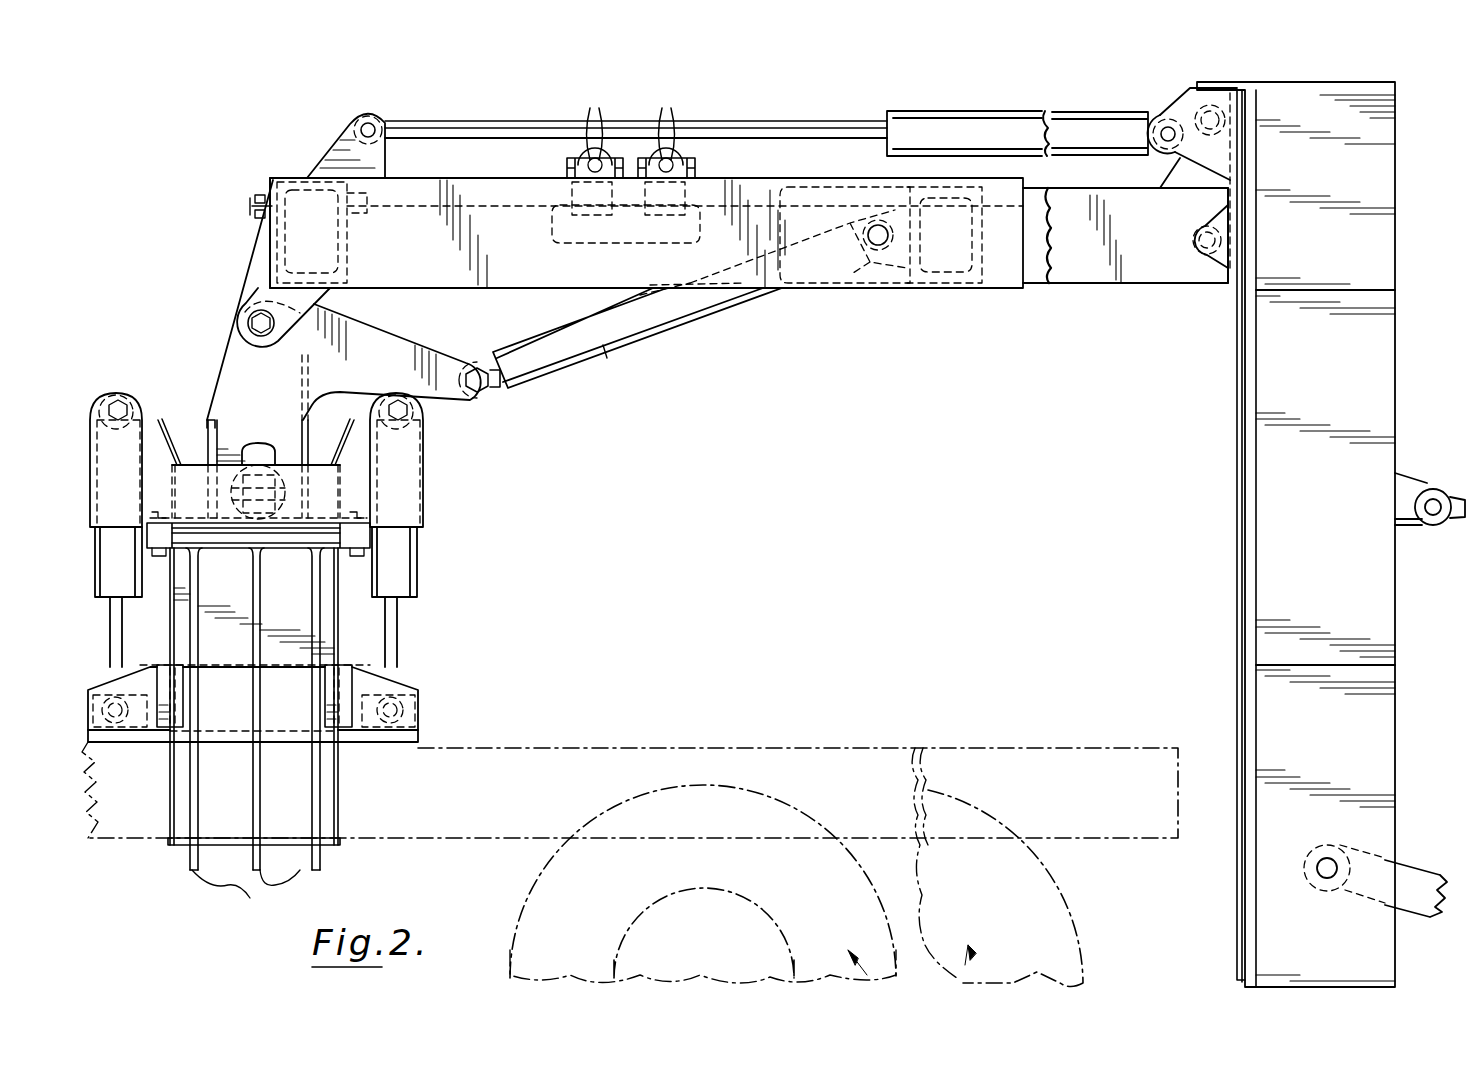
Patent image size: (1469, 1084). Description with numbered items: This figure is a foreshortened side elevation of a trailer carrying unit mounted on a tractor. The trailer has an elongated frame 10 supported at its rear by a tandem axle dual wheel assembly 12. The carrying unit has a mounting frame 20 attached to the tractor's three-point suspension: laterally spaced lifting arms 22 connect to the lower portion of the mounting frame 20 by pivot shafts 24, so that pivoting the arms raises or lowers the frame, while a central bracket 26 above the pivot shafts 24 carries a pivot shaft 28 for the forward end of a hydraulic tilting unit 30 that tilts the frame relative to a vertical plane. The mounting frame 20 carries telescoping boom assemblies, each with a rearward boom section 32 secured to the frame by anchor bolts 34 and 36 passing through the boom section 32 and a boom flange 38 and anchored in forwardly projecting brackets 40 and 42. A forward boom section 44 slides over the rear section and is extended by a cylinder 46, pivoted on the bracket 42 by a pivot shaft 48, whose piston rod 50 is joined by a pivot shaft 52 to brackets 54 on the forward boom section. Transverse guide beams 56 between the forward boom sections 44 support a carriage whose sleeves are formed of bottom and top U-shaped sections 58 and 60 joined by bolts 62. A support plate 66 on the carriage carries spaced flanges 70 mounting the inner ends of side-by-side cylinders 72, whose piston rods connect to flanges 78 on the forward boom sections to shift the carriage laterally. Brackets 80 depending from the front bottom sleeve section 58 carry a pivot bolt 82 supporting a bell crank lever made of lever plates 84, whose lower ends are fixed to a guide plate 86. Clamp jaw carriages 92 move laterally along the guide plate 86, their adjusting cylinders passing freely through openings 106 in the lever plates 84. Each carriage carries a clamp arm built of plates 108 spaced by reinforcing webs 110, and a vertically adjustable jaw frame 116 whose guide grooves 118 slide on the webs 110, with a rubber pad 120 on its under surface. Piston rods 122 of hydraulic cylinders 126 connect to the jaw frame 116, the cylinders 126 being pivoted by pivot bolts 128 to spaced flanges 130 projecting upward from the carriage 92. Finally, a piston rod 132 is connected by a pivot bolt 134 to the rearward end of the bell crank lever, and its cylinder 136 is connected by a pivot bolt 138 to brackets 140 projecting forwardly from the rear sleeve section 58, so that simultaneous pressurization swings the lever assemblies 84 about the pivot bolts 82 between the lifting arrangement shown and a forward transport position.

The elongated frame 10 is at (862, 748).
The tandem axle dual wheel assembly 12 is at (975, 980).
The mounting frame 20 is at (1243, 487).
The lifting arms 22 is at (1420, 880).
The pivot shafts 24 is at (1325, 858).
The central bracket 26 is at (1395, 493).
The pivot shaft 28 is at (1436, 513).
The extensible hydraulic piston-cylinder tilting unit 30 is at (1465, 497).
The rearward boom section 32 is at (1082, 285).
The anchor bolt 34 is at (1192, 240).
The anchor bolt 36 is at (1196, 113).
The boom flange 38 is at (1200, 180).
The bracket 40 is at (1203, 258).
The bracket 42 is at (1203, 152).
The forward boom section 44 is at (507, 280).
The cylinder 46 is at (1057, 118).
The pivot shaft 48 is at (1160, 133).
The piston rod 50 is at (470, 126).
The pivot shaft 52 is at (363, 122).
The brackets 54 is at (387, 157).
The guide beams 56 is at (935, 280).
The bottom U-shaped section 58 is at (268, 255).
The top U-shaped section 60 is at (272, 178).
The bolts 62 is at (252, 210).
The support plate 66 is at (660, 244).
The spaced flanges 70 is at (666, 125).
The cylinders 72 is at (572, 155).
The spaced flanges 78 is at (594, 125).
The brackets 80 is at (262, 290).
The pivot bolt 82 is at (246, 323).
The lever plates 84 is at (235, 375).
The guide plate 86 is at (288, 548).
The clamp jaw carriages 92 is at (352, 555).
The openings 106 is at (263, 455).
The plates 108 is at (246, 890).
The reinforcing webs 110 is at (220, 790).
The jaw frame 116 is at (408, 698).
The guide grooves 118 is at (168, 670).
The rubber pad 120 is at (420, 737).
The piston rods 122 is at (112, 640).
The hydraulic cylinders 126 is at (107, 580).
The pivot bolts 128 is at (130, 400).
The spaced flanges 130 is at (405, 468).
The piston rod 132 is at (497, 388).
The pivot bolt 134 is at (486, 368).
The cylinder 136 is at (602, 357).
The pivot bolt 138 is at (915, 233).
The brackets 140 is at (885, 225).